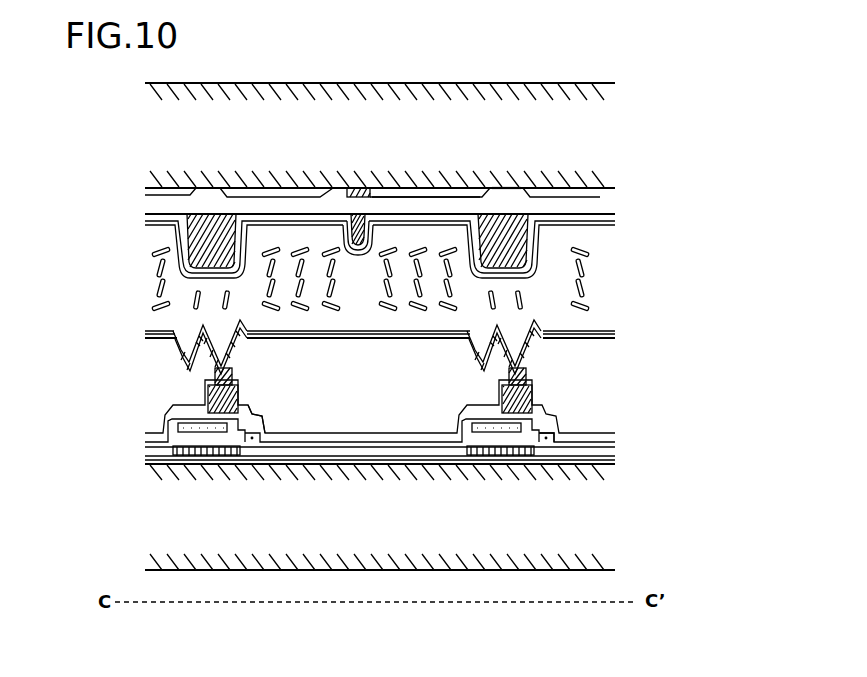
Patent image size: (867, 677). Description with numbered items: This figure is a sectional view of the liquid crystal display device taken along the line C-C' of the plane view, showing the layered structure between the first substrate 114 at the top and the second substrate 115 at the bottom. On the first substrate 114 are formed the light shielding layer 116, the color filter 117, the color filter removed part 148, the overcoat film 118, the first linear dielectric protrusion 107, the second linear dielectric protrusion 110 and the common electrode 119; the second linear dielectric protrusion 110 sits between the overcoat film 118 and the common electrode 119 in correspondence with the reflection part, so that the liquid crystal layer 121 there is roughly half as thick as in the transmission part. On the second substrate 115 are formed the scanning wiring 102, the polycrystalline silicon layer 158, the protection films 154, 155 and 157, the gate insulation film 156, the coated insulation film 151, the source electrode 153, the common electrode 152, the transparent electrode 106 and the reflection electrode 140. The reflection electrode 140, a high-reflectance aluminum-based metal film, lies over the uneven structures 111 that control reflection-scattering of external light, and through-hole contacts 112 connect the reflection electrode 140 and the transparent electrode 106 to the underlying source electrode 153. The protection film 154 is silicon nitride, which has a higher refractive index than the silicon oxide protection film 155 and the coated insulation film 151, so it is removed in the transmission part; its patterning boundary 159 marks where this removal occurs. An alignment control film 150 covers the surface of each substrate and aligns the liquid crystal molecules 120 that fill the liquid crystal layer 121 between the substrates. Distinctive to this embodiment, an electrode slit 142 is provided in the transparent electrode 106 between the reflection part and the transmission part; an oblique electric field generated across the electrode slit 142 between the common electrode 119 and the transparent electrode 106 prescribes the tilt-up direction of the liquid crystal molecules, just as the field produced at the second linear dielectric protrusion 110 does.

The scanning wiring 102 is at (541, 443).
The transparent electrode 106 is at (603, 340).
The first linear dielectric protrusion 107 is at (353, 223).
The second linear dielectric protrusion 110 is at (532, 227).
The uneven structure 111 is at (197, 340).
The through-hole contact 112 is at (226, 388).
The first substrate 114 is at (570, 133).
The second substrate 115 is at (617, 570).
The light shielding layer 116 is at (357, 188).
The color filter 117 is at (450, 192).
The overcoat film 118 is at (603, 208).
The common electrode 119 is at (147, 213).
The liquid crystal molecules 120 is at (152, 265).
The liquid crystal layer 121 is at (600, 293).
The reflection electrode 140 is at (187, 361).
The electrode slit 142 is at (478, 345).
The color filter removed part 148 is at (509, 188).
The alignment control film 150 is at (147, 221).
The coated insulation film 151 is at (372, 382).
The common electrode 152 is at (195, 427).
The source electrode 153 is at (542, 385).
The protection film 154 is at (552, 422).
The protection film 155 is at (602, 440).
The gate insulation film 156 is at (603, 455).
The protection film 157 is at (605, 455).
The polycrystalline silicon layer 158 is at (172, 450).
The patterning boundary 159 is at (263, 415).